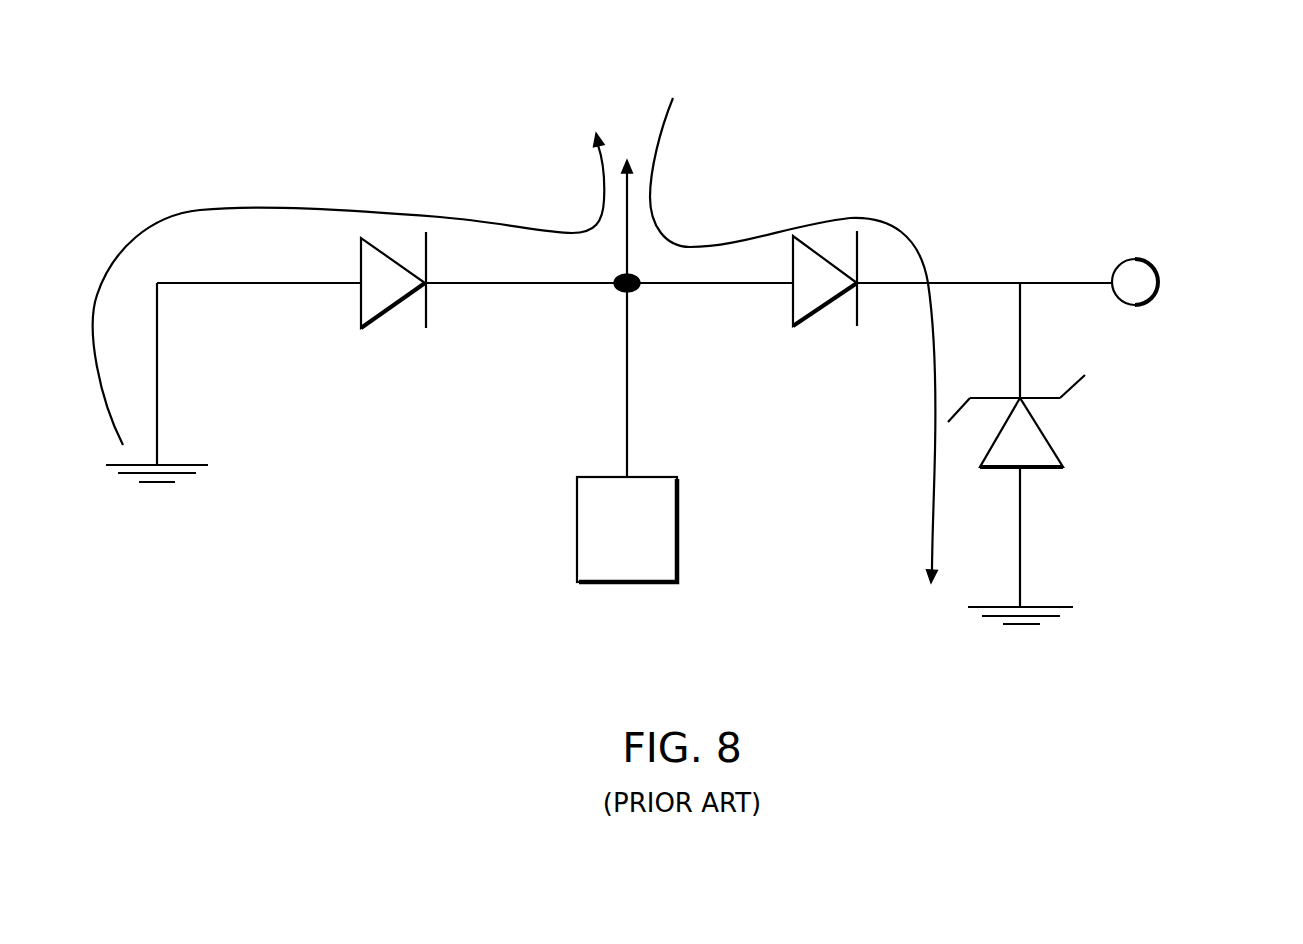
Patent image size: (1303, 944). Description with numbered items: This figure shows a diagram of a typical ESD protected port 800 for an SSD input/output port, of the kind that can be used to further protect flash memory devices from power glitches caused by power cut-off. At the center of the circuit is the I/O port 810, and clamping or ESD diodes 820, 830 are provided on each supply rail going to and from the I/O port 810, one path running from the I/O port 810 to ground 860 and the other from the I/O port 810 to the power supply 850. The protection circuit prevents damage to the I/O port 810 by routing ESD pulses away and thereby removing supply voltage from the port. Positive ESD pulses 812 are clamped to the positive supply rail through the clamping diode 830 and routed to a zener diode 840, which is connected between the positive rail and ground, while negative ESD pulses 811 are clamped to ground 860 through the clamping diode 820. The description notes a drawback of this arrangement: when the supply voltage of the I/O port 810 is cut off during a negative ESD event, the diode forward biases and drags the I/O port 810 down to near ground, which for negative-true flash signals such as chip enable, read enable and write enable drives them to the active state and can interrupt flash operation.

The ESD protected port 800 is at (403, 562).
The I/O port 810 is at (623, 597).
The negative ESD pulses 811 is at (302, 198).
The positive ESD pulses 812 is at (792, 217).
The clamping or ESD diode 820 is at (396, 327).
The clamping or ESD diode 830 is at (827, 325).
The zener diode 840 is at (1072, 443).
The power supply 850 is at (1173, 253).
The ground 860 is at (145, 507).